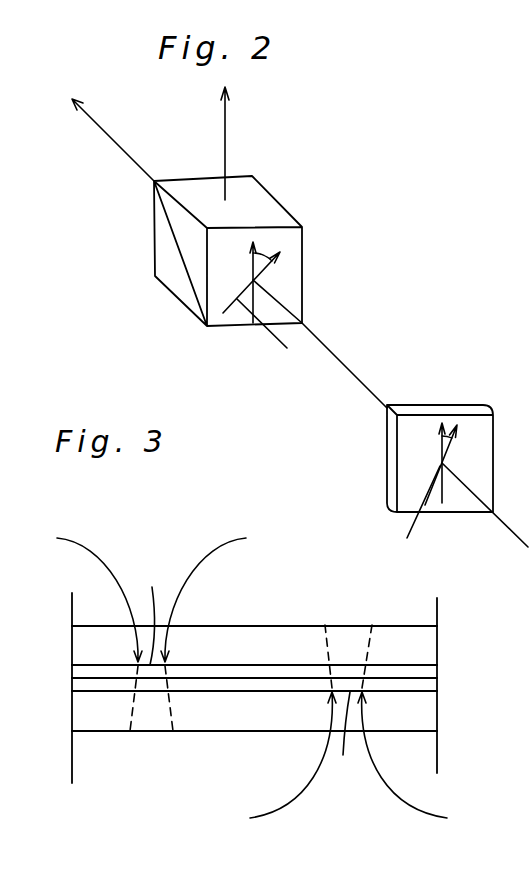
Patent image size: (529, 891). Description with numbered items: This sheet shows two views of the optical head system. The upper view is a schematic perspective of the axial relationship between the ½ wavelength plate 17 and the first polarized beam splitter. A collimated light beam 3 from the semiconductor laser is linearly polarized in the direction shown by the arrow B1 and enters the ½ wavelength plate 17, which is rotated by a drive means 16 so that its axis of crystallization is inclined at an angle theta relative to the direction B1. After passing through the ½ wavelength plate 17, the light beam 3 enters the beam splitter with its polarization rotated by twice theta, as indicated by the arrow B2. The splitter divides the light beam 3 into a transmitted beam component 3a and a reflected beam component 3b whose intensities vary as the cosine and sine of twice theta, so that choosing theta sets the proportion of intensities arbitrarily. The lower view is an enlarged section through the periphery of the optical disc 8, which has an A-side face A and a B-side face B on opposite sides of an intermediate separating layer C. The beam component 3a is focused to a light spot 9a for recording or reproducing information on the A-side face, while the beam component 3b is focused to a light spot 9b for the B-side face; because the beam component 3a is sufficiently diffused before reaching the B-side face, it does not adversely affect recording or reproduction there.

In FIG. 2, the light beam 3 is at (350, 368).
In FIG. 2, the beam component 3a is at (120, 148).
In FIG. 3, the beam component 3a is at (393, 797).
In FIG. 2, the beam component 3b is at (225, 148).
In FIG. 3, the beam component 3b is at (205, 552).
In FIG. 2, the drive means 16 is at (341, 251).
In FIG. 2, the ½ wavelength plate 17 is at (453, 403).
In FIG. 2, the polarization direction of incident light beam B1 is at (413, 517).
In FIG. 2, the rotated polarization direction B2 is at (278, 337).
In FIG. 3, the optical disc 8 is at (392, 645).
In FIG. 3, the light spot 9a is at (347, 740).
In FIG. 3, the light spot 9b is at (151, 612).
In FIG. 3, the A-side face A is at (88, 693).
In FIG. 3, the B-side face B is at (88, 665).
In FIG. 3, the separating layer C is at (88, 680).